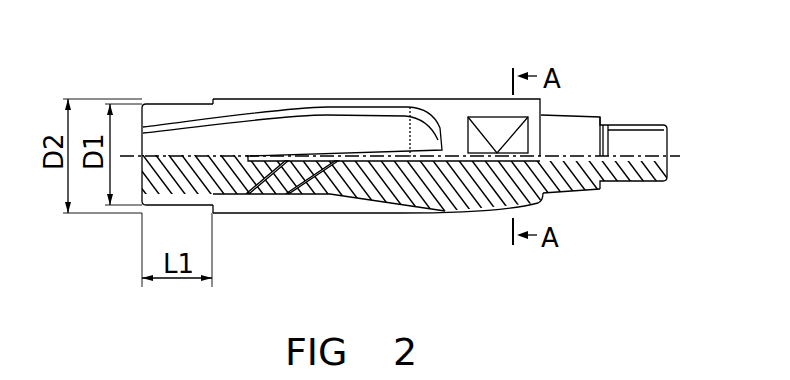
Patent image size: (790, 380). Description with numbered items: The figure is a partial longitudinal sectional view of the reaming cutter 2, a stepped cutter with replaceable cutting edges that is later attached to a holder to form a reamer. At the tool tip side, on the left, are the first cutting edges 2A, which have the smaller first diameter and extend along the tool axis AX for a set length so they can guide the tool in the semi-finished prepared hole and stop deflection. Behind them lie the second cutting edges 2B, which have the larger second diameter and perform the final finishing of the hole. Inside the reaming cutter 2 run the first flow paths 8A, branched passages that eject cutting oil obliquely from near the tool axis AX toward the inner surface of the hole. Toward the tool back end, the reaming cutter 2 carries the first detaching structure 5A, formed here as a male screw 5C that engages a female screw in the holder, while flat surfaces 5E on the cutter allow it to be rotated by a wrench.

The reaming cutter 2 is at (331, 112).
The first cutting edges 2A is at (175, 104).
The second cutting edges 2B is at (305, 98).
The first flow path 8A is at (442, 150).
The flat surfaces 5E is at (500, 122).
The male screw 5C is at (609, 123).
The first detaching structure 5A is at (634, 116).
The tool axis AX is at (672, 154).